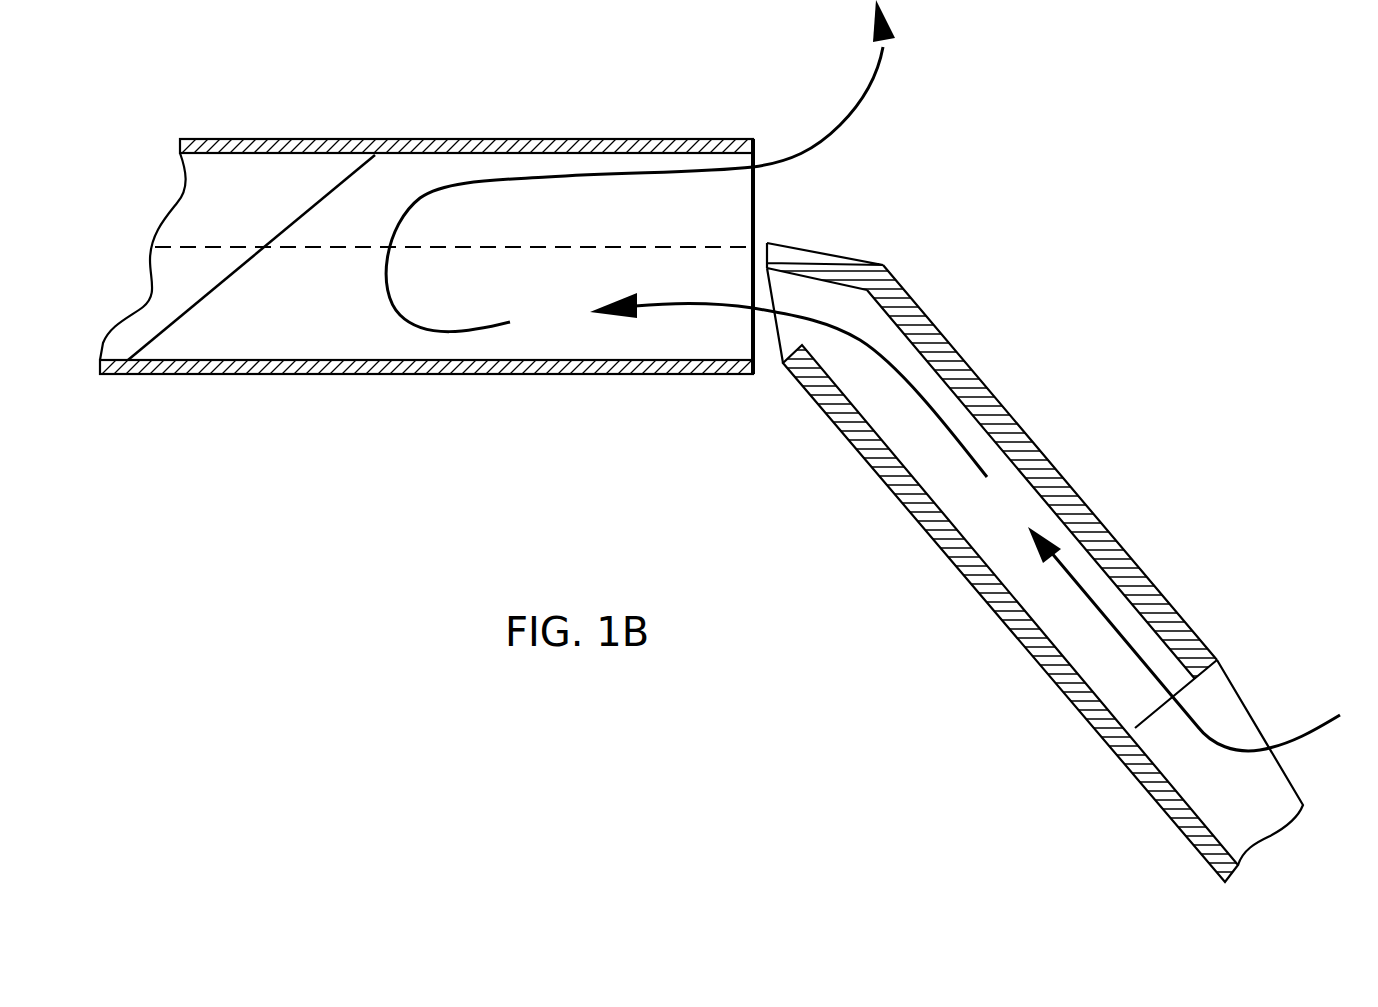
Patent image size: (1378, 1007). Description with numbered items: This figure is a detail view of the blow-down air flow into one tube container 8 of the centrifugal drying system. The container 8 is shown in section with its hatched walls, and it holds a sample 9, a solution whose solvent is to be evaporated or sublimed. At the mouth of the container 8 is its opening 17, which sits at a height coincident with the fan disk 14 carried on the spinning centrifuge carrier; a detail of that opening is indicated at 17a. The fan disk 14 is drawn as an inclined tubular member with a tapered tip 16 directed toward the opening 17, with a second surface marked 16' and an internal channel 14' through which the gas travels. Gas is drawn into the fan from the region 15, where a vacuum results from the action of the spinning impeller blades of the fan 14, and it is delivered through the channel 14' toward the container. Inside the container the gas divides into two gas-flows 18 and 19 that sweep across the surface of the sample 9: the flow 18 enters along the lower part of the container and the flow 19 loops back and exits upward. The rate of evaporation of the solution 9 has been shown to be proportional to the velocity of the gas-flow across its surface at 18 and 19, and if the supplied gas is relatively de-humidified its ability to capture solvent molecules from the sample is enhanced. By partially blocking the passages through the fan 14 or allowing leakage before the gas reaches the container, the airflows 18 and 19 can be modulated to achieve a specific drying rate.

The container 8 is at (565, 374).
The sample 9 is at (278, 170).
The fan disk 14 is at (999, 496).
The nozzle channel 14' is at (1181, 588).
The vacuum region 15 is at (1223, 740).
The nozzle tip 16 is at (852, 284).
The nozzle outer wall 16' is at (1010, 613).
The opening 17 is at (756, 206).
The end wall opening 17a is at (752, 327).
The gas-flow 18 is at (852, 340).
The gas-flow 19 is at (815, 139).